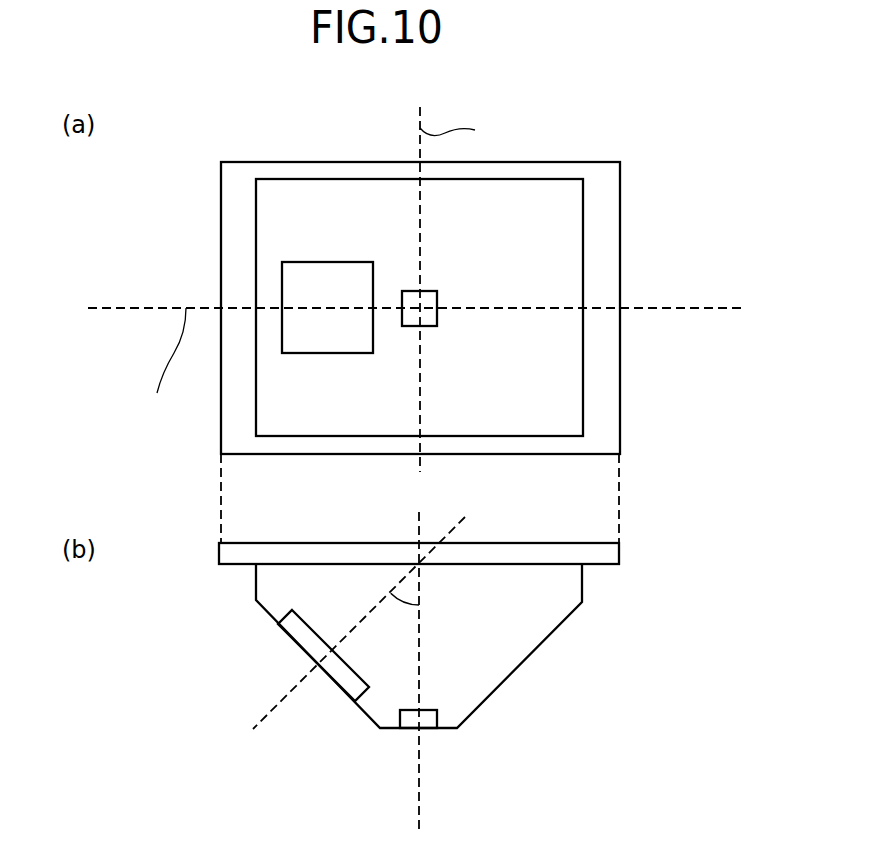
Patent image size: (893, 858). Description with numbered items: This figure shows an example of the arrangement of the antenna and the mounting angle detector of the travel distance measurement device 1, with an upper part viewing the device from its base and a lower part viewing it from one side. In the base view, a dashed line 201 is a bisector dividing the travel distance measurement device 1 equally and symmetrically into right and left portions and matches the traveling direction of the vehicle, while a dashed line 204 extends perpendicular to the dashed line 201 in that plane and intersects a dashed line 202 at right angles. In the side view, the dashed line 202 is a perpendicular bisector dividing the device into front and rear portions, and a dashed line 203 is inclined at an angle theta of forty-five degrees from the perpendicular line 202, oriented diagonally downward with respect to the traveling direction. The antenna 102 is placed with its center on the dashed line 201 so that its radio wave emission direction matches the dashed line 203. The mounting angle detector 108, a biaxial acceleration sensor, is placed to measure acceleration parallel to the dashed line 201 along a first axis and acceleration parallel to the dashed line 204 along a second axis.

The travel distance measurement device 1 is at (256, 248).
The antenna 102 is at (334, 268).
The mounting angle detector 108 is at (437, 318).
The dashed line 201 is at (123, 308).
The dashed line 202 is at (420, 806).
The dashed line 203 is at (287, 693).
The dashed line 204 is at (420, 224).